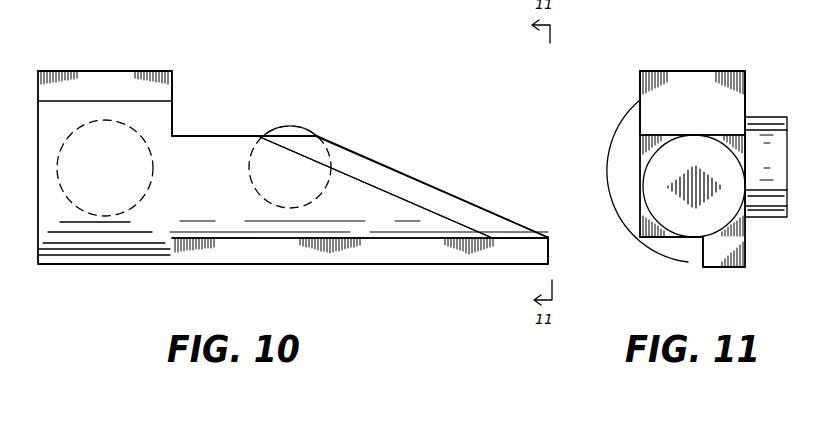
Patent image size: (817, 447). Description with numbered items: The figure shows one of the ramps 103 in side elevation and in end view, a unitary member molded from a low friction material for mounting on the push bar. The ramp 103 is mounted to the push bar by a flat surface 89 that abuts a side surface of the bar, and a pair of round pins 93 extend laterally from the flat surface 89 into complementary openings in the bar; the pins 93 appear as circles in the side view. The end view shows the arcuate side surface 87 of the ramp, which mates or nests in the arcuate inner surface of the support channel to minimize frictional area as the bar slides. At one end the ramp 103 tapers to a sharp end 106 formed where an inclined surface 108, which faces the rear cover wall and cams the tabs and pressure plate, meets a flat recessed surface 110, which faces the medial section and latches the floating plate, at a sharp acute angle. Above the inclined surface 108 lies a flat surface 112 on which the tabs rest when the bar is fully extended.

In FIG. 11, the arcuate side surface 87 is at (609, 155).
In FIG. 11, the flat surface 89 is at (745, 100).
In FIG. 10, the round pins 93 is at (93, 122).
In FIG. 11, the round pins 93 is at (758, 217).
In FIG. 10, the ramp 103 is at (163, 108).
In FIG. 10, the sharp end 106 is at (520, 234).
In FIG. 11, the sharp end 106 is at (693, 250).
In FIG. 10, the inclined surface 108 is at (418, 181).
In FIG. 11, the inclined surface 108 is at (693, 145).
In FIG. 10, the flat recessed surface 110 is at (252, 240).
In FIG. 11, the flat recessed surface 110 is at (655, 250).
In FIG. 10, the flat surface 112 is at (217, 135).
In FIG. 11, the flat surface 112 is at (657, 133).